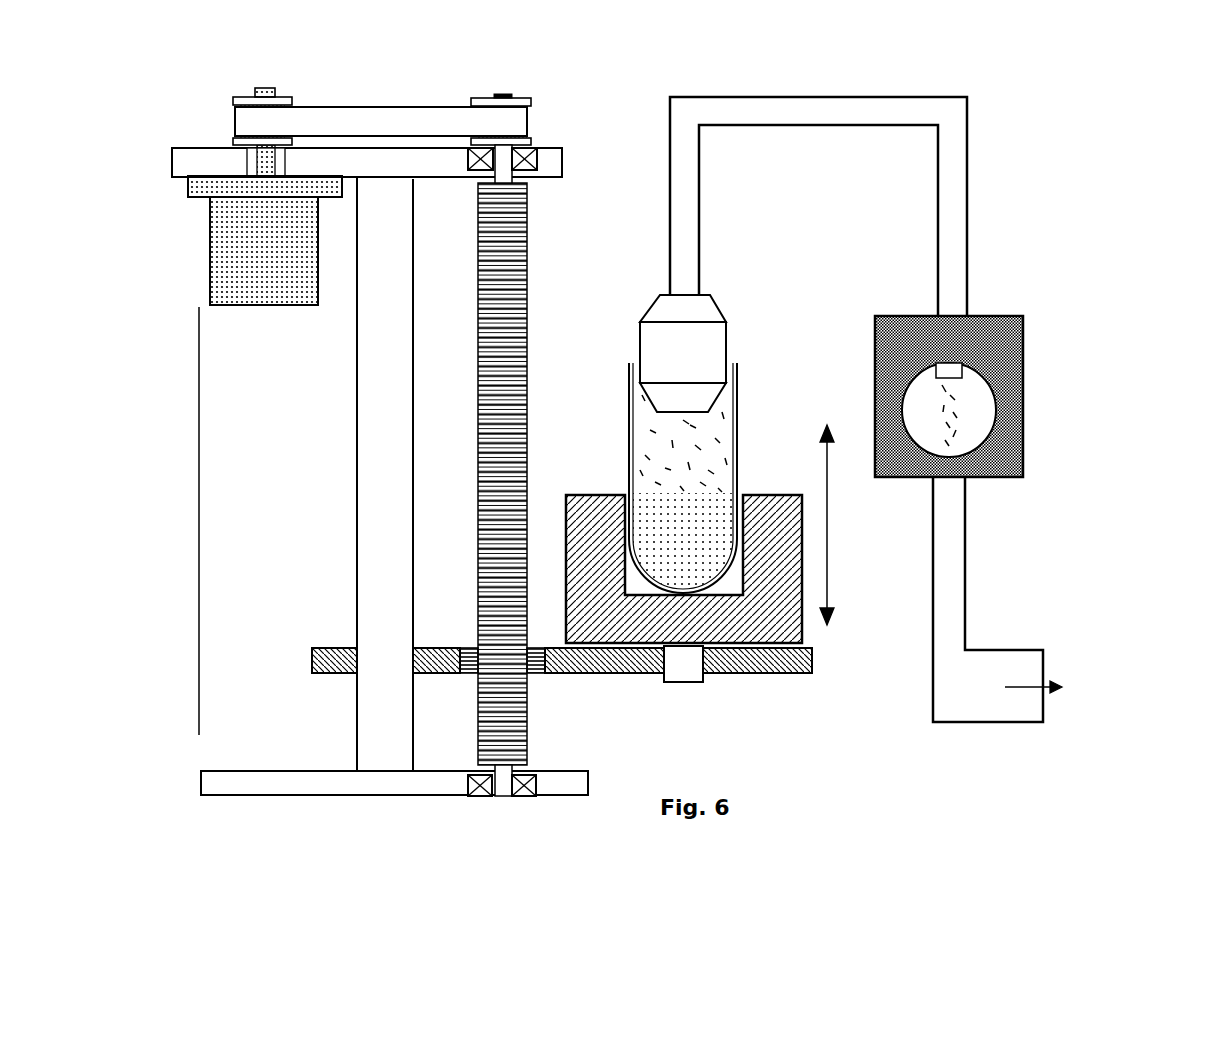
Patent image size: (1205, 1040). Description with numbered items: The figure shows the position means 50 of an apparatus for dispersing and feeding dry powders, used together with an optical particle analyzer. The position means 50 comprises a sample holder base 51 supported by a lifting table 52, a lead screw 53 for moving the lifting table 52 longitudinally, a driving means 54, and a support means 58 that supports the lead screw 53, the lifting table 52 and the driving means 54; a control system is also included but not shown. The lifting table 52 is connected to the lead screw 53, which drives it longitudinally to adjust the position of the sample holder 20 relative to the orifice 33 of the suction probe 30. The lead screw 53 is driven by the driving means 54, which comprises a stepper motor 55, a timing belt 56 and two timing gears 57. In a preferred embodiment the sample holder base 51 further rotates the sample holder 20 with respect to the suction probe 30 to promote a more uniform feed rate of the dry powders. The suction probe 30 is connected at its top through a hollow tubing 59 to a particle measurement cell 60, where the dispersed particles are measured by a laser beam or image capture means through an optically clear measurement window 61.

The sample holder 20 is at (740, 417).
The suction probe 30 is at (702, 345).
The orifice 33 is at (678, 413).
The position means 50 is at (199, 502).
The sample holder base 51 is at (780, 568).
The lifting table 52 is at (763, 673).
The lead screw 53 is at (512, 310).
The driving means 54 is at (185, 161).
The stepper motor 55 is at (262, 240).
The timing belt 56 is at (385, 120).
The timing gears 57 is at (288, 95).
The support means 58 is at (373, 363).
The hollow tubing 59 is at (740, 116).
The particle measurement cell 60 is at (1003, 335).
The optically clear measurement window 61 is at (972, 402).